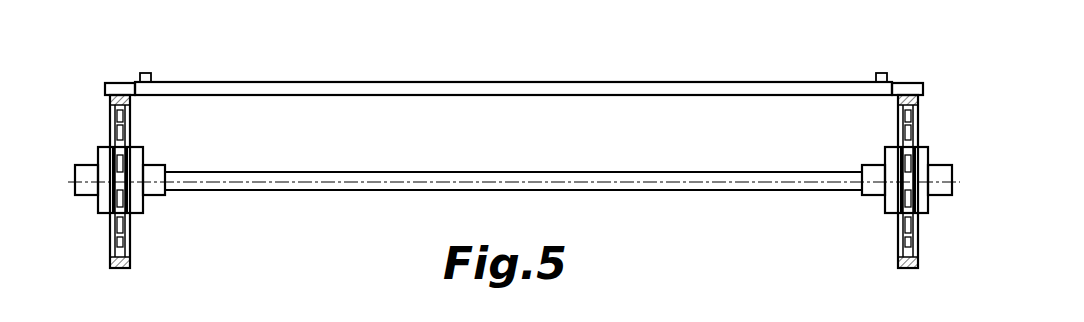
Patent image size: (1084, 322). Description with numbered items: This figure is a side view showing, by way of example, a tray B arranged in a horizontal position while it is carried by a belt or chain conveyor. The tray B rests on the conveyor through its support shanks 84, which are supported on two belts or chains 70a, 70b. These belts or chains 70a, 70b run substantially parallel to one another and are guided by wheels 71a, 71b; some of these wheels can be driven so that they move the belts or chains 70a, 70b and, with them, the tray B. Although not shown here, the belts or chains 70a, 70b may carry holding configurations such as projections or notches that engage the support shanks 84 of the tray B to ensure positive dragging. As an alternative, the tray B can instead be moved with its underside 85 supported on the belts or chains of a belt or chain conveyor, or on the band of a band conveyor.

The tray B is at (470, 70).
The support shanks 84 is at (122, 88).
The underside 85 is at (492, 95).
The belt or chain 70a is at (128, 98).
The belt or chain 70b is at (898, 100).
The wheel 71a is at (142, 205).
The wheel 71b is at (887, 205).